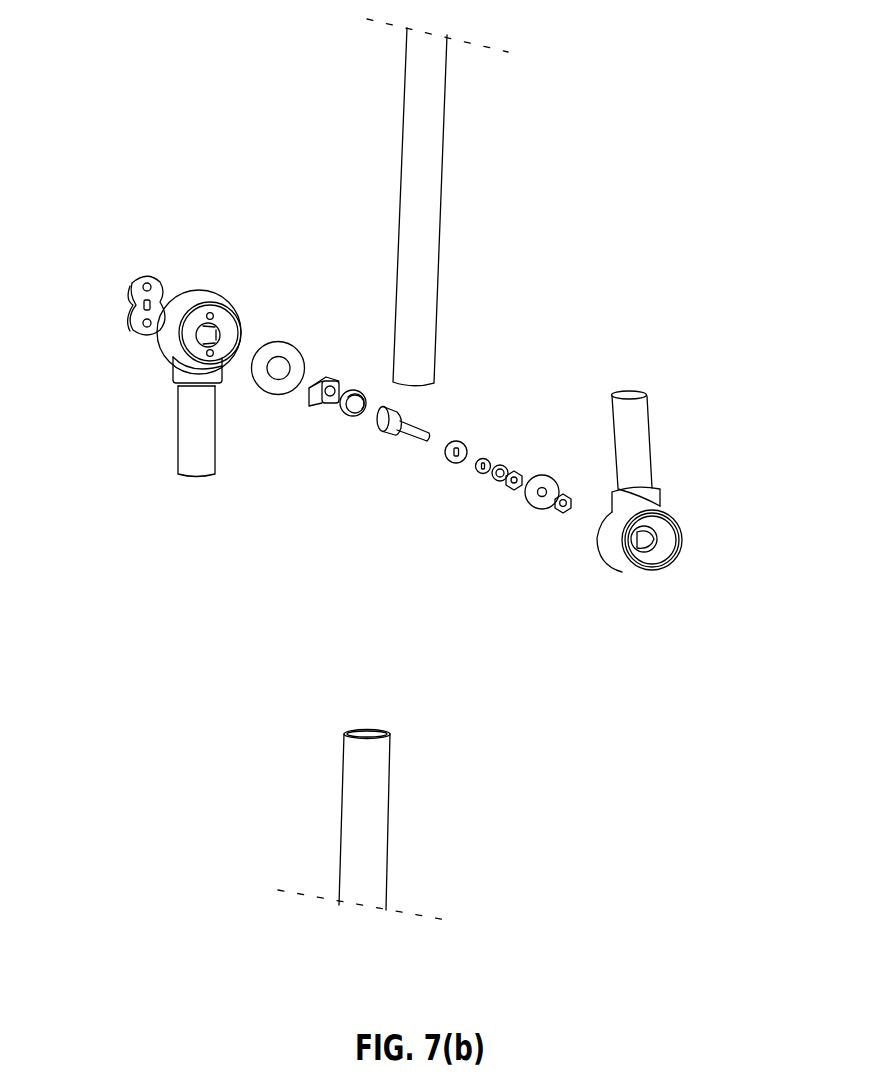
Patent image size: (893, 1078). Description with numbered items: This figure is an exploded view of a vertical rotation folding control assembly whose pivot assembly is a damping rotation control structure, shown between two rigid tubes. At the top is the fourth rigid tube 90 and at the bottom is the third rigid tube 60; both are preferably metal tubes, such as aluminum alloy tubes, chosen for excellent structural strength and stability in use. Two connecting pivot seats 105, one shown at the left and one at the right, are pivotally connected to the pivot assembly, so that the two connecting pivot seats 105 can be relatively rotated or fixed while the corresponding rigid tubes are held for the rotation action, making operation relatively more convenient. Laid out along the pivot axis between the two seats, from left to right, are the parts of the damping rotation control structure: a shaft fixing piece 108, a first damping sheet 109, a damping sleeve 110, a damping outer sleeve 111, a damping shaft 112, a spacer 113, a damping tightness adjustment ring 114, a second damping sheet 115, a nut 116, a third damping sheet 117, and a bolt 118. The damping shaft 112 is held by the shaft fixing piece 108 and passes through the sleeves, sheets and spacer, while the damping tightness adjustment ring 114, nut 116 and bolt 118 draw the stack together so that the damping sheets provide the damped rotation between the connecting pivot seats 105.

The third rigid tube 60 is at (367, 798).
The fourth rigid tube 90 is at (430, 221).
The connecting pivot seat 105 is at (185, 432).
The shaft fixing piece 108 is at (135, 313).
The first damping sheet 109 is at (272, 388).
The damping sleeve 110 is at (318, 402).
The damping outer sleeve 111 is at (353, 415).
The damping shaft 112 is at (390, 428).
The spacer 113 is at (450, 462).
The damping tightness adjustment ring 114 is at (484, 458).
The second damping sheet 115 is at (503, 465).
The nut 116 is at (513, 488).
The third damping sheet 117 is at (545, 475).
The bolt 118 is at (563, 512).